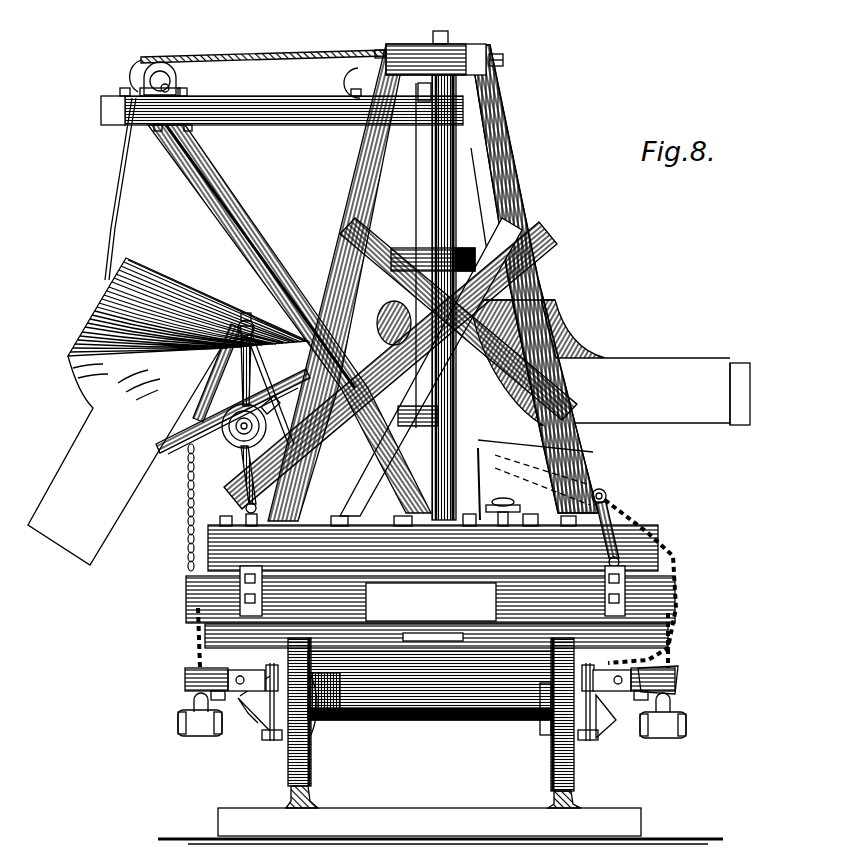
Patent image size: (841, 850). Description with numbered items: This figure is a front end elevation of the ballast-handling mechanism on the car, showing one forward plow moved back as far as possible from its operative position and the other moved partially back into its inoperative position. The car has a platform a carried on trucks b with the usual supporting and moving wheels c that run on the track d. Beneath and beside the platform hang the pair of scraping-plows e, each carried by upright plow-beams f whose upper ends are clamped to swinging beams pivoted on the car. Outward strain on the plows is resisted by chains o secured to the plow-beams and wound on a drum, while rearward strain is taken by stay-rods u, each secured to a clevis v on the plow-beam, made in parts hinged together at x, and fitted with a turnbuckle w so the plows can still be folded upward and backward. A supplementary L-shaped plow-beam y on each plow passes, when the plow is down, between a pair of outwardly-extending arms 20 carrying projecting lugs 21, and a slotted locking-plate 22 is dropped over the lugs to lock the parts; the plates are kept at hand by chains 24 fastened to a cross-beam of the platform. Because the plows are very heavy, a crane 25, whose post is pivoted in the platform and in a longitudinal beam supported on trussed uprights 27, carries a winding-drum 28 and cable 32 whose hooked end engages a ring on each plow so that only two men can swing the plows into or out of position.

The cable 32 is at (245, 152).
The crane 25 is at (390, 283).
The trussed uprights 27 is at (540, 260).
The winding-drum 28 is at (373, 316).
The clevis v is at (238, 311).
The plow-beams f is at (255, 335).
The turnbuckle w is at (232, 407).
The scraping-plows e is at (389, 356).
The supplementary L-shaped plow-beam y is at (186, 448).
The hinge x is at (233, 497).
The chains o is at (178, 542).
The stay-rods u is at (543, 477).
The platform a is at (430, 568).
The chains 24 is at (190, 640).
The outwardly-extending arms 20 is at (200, 662).
The projecting lugs 21 is at (178, 672).
The slotted locking-plate 22 is at (188, 728).
The trucks b is at (262, 733).
The supporting and moving wheels c is at (305, 762).
The track d is at (305, 796).